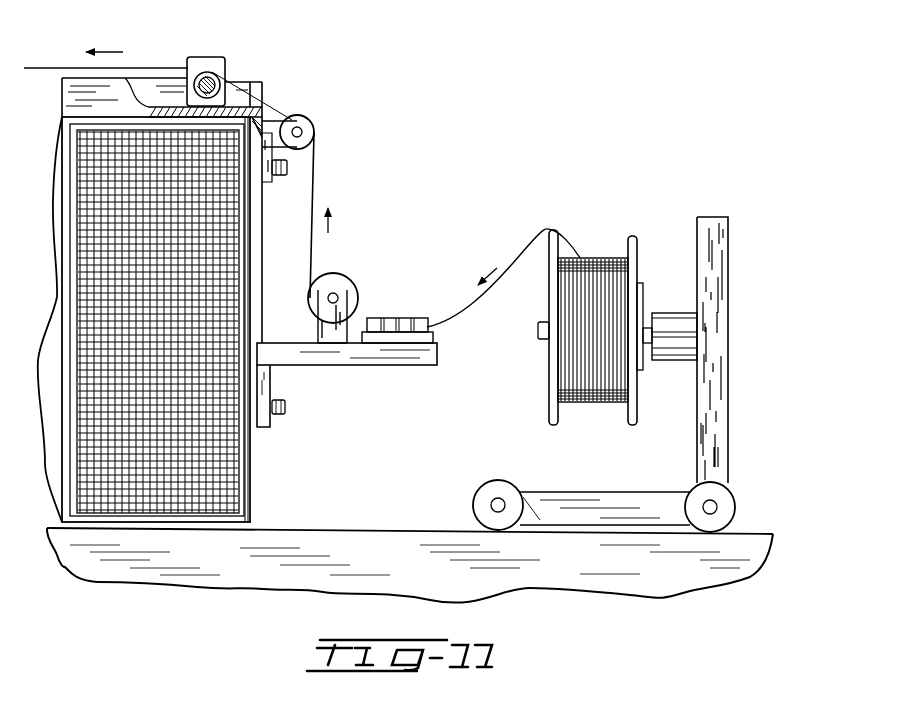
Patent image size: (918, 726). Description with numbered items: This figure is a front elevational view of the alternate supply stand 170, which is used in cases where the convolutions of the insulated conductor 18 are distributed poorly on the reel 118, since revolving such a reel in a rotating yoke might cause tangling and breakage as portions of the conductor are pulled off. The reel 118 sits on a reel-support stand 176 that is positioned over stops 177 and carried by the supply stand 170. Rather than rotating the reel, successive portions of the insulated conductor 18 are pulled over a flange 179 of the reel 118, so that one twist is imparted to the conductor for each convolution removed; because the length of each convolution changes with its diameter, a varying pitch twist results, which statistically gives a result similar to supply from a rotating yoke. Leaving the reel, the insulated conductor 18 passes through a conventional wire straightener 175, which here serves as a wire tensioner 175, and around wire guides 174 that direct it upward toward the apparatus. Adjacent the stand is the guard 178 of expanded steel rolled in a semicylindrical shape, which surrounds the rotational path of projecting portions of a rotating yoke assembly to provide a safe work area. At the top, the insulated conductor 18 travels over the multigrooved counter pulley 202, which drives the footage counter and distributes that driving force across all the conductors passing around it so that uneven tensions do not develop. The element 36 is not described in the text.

The multigrooved counter pulley 202 is at (215, 72).
The mounting bracket 36 is at (270, 92).
The wire guide 174 is at (317, 126).
The insulated conductor 18 is at (319, 182).
The wire straightener 175 is at (395, 318).
The reel 118 is at (588, 310).
The alternate supply stand 170 is at (739, 356).
The flange 179 is at (549, 396).
The reel-support stand 176 is at (728, 463).
The stop 177 is at (513, 531).
The guard 178 is at (250, 490).